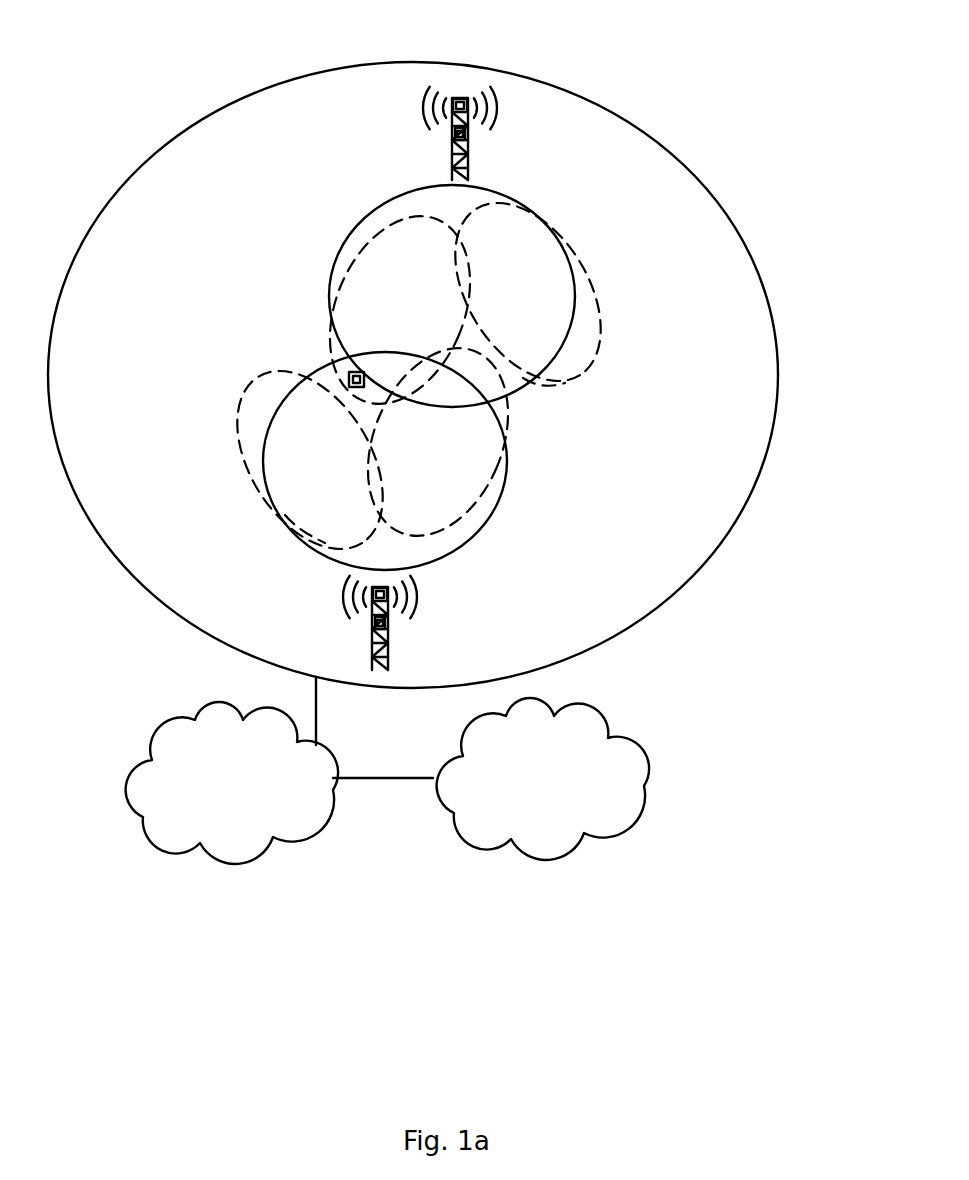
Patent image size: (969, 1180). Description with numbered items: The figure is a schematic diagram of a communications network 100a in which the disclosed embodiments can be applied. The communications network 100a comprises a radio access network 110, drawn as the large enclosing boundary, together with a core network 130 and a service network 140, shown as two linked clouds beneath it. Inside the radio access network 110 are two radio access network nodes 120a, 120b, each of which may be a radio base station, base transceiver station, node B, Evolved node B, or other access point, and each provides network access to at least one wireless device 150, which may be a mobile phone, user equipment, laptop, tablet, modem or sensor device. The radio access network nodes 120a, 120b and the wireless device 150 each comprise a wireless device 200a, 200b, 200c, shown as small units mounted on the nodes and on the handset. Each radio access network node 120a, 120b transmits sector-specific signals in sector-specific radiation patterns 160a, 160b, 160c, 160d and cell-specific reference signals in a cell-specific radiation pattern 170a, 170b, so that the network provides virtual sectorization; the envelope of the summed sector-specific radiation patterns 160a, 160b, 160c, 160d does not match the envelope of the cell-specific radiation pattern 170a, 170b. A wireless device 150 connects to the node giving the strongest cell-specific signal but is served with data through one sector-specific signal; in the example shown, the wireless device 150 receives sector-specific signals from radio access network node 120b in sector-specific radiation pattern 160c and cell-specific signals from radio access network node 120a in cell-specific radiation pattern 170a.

The communications network 100a is at (758, 66).
The radio access network 110 is at (152, 162).
The radio access network node 120a is at (370, 666).
The radio access network node 120b is at (450, 178).
The core network 130 is at (193, 754).
The service network 140 is at (508, 751).
The wireless device 150 is at (345, 378).
The sector-specific radiation pattern 160a is at (245, 462).
The sector-specific radiation pattern 160b is at (470, 514).
The sector-specific radiation pattern 160c is at (370, 246).
The sector-specific radiation pattern 160d is at (600, 312).
The cell-specific radiation pattern 170a is at (306, 540).
The cell-specific radiation pattern 170b is at (523, 378).
The wireless device 200a is at (388, 622).
The wireless device 200b is at (470, 134).
The wireless device 200c is at (366, 378).